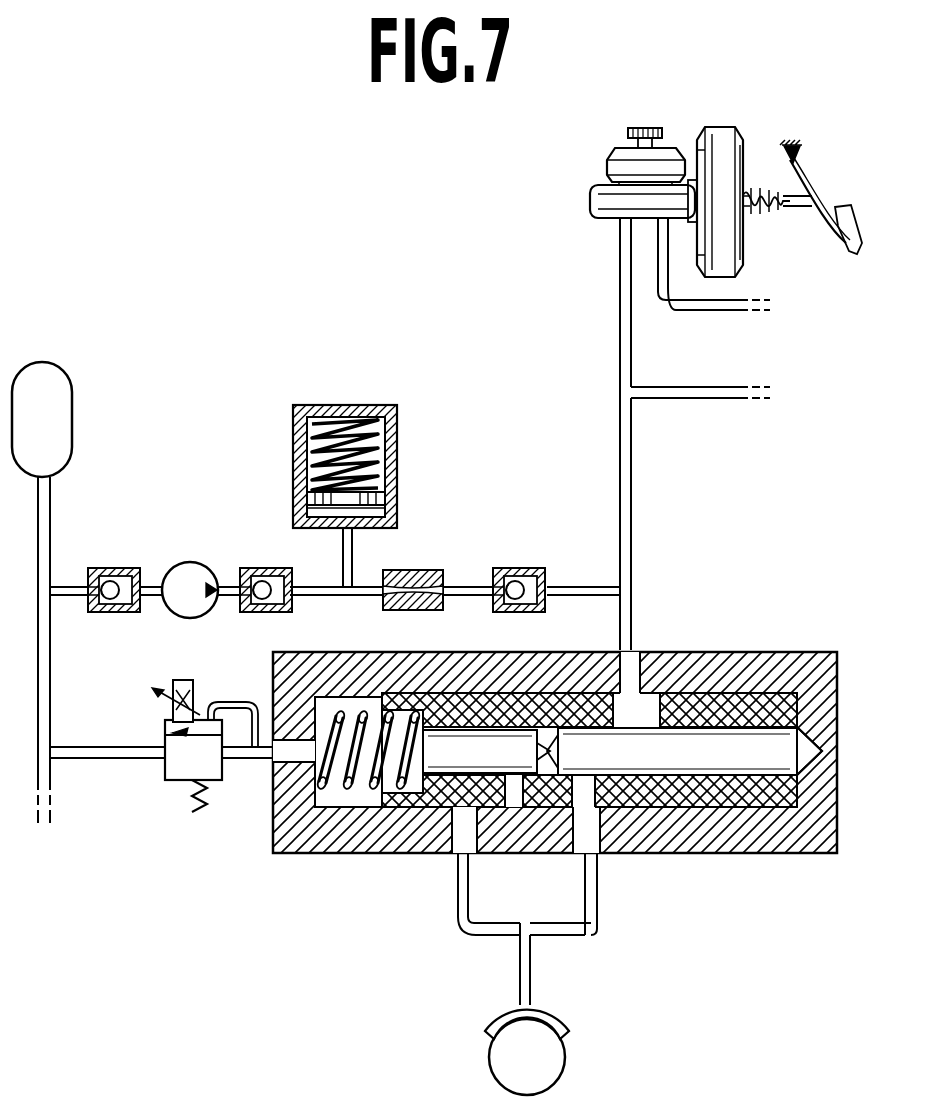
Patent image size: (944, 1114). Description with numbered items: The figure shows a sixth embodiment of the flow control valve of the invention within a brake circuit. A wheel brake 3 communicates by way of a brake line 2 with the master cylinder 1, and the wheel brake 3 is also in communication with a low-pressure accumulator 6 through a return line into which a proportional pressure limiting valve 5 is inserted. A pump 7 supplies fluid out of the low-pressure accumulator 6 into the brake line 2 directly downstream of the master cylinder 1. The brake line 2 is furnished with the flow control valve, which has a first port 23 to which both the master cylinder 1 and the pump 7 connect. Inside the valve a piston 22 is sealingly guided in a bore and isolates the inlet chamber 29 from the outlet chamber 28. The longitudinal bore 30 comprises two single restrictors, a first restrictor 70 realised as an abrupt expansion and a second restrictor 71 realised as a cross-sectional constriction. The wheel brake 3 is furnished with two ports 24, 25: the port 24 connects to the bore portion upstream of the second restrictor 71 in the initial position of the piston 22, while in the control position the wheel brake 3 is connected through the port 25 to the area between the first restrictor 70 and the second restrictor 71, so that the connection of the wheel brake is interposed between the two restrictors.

The master cylinder 1 is at (586, 190).
The brake line 2 is at (622, 347).
The wheel brake 3 is at (568, 1036).
The proportional pressure limiting valve 5 is at (178, 773).
The low-pressure accumulator 6 is at (58, 398).
The pump 7 is at (182, 573).
The piston 22 is at (762, 655).
The first port 23 is at (638, 652).
The port 24 is at (596, 855).
The port 25 is at (452, 855).
The outlet chamber 28 is at (352, 800).
The inlet chamber 29 is at (822, 751).
The longitudinal bore 30 is at (771, 776).
The first restrictor 70 is at (427, 752).
The second restrictor 71 is at (564, 752).